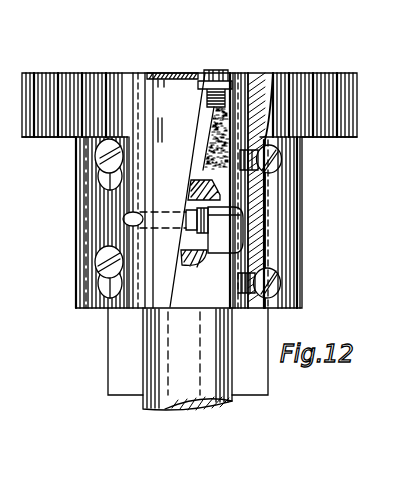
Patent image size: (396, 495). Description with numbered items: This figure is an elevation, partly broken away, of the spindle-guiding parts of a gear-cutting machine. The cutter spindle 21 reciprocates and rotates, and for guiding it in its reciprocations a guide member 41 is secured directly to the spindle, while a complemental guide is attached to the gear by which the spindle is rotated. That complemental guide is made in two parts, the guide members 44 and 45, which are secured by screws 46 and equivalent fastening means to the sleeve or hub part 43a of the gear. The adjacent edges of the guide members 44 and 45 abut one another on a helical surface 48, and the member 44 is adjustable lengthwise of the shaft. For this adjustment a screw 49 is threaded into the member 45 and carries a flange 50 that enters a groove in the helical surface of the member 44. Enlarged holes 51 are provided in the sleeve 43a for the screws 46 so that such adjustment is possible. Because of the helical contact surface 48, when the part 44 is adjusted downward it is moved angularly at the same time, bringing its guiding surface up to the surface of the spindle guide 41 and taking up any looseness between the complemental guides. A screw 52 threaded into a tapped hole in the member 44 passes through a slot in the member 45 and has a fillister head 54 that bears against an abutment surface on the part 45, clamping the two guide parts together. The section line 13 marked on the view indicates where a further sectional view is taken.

The section line 13- 13 is at (353, 153).
The cutter spindle 21 is at (170, 350).
The guide member 41 is at (127, 327).
The sleeve or hub part 43a is at (92, 232).
The guide member 44 is at (180, 88).
The guide member 45 is at (288, 235).
The screws 46 is at (102, 273).
The helical surface 48 is at (196, 133).
The screw 49 is at (231, 92).
The flange 50 is at (198, 73).
The enlarged holes 51 is at (75, 308).
The screw 52 is at (214, 230).
The fillister head 54 is at (187, 213).